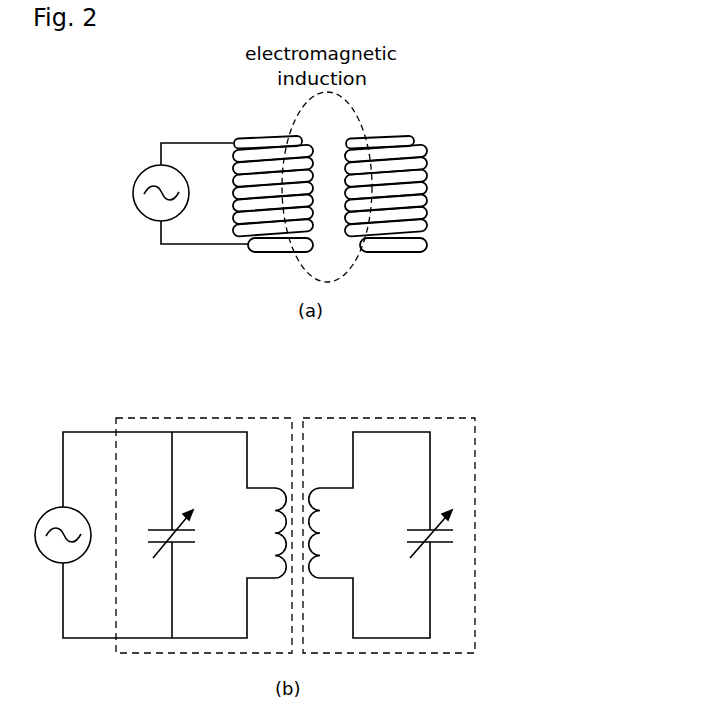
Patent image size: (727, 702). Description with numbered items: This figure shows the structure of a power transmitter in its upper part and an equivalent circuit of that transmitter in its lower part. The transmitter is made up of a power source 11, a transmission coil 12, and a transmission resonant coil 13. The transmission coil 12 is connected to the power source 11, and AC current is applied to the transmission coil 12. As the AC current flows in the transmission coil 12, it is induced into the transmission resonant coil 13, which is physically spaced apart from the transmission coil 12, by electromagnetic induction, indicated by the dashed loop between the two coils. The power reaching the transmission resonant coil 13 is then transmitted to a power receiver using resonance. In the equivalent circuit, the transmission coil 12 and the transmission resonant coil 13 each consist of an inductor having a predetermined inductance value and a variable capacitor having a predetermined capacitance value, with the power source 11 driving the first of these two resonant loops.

The power source 11 is at (138, 165).
The transmission coil 12 is at (247, 142).
The transmission resonant coil 13 is at (385, 147).